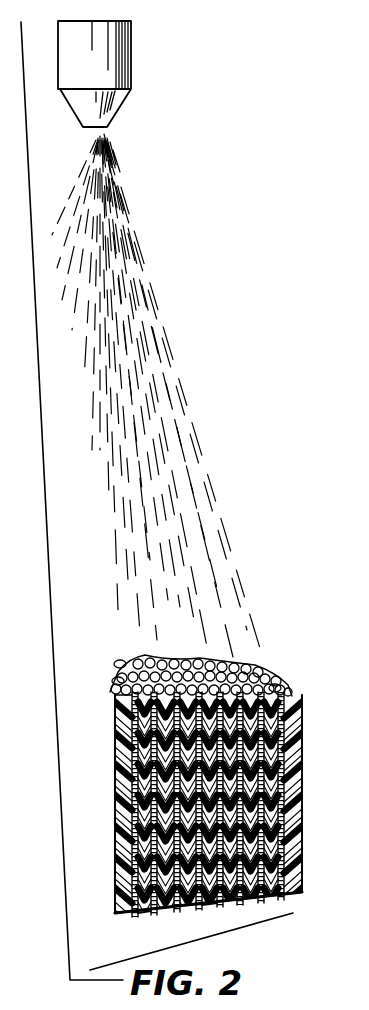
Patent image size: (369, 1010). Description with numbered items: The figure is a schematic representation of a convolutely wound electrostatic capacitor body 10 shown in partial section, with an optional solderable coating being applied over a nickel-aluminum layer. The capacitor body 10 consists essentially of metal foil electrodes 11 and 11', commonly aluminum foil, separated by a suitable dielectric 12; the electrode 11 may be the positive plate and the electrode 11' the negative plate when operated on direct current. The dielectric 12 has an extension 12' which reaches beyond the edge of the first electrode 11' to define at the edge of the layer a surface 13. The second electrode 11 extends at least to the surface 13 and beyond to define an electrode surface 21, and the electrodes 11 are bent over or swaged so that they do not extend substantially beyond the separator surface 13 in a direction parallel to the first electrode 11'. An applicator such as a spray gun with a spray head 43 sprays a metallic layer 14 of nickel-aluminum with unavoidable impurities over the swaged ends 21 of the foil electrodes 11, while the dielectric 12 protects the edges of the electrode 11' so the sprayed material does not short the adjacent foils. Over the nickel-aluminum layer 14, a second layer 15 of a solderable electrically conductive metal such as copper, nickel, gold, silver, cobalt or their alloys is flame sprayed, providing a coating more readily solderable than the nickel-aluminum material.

The capacitor body 10 is at (106, 768).
The metal foil electrode 11 is at (220, 915).
The metal foil electrode 11' is at (163, 918).
The dielectric 12 is at (103, 800).
The extension of dielectric layer 12' is at (203, 802).
The surface 13 is at (132, 657).
The metallic layer 14 is at (113, 680).
The second layer 15 is at (113, 663).
The electrode surface 21 is at (278, 685).
The spray head 43 is at (101, 104).